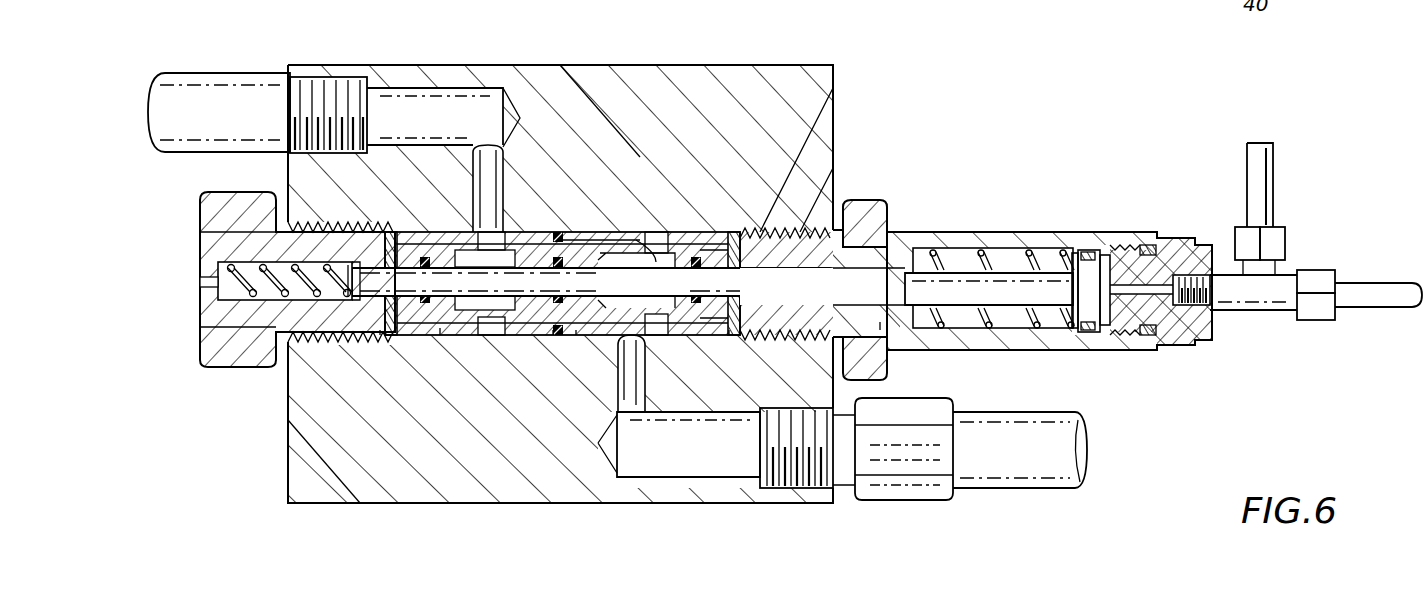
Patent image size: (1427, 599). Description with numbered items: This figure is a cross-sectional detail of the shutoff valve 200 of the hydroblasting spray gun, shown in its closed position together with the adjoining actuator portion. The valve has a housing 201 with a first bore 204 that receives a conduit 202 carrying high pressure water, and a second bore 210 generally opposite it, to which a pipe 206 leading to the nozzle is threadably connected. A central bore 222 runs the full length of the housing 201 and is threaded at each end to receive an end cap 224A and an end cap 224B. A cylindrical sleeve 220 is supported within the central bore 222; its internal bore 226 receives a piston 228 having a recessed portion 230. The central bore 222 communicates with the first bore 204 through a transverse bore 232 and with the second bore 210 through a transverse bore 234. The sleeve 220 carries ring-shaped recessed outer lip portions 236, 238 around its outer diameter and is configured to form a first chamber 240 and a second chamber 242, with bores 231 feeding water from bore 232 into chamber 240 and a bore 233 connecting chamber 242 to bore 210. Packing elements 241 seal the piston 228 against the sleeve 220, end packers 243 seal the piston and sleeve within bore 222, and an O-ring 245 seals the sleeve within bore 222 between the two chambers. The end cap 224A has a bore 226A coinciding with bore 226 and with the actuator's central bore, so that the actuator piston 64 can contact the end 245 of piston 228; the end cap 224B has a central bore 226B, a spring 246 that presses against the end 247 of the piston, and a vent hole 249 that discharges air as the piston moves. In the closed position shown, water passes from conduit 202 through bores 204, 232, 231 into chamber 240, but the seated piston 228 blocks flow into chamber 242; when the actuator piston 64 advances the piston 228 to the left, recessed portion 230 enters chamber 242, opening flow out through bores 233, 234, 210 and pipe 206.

The piston 64 is at (987, 290).
The shutoff valve 200 is at (702, 58).
The housing 201 is at (582, 82).
The conduit 202 is at (1025, 478).
The first bore 204 is at (722, 462).
The pipe 206 is at (220, 92).
The second bore 210 is at (417, 105).
The cylindrical sleeve 220 is at (548, 228).
The central bore 222 is at (663, 232).
The end cap 224A is at (812, 232).
The end cap 224B is at (225, 356).
The internal bore 226 is at (730, 232).
The bore 226A is at (866, 212).
The central bore 226B is at (208, 322).
The piston 228 is at (287, 388).
The recessed portion 230 is at (590, 232).
The bores 231 is at (615, 400).
The transverse bore 232 is at (640, 390).
The bore 233 is at (475, 256).
The transverse bore 234 is at (487, 200).
The recessed outer lip portion 236 is at (440, 338).
The recessed outer lip portion 238 is at (642, 242).
The first chamber 240 is at (692, 262).
The packing elements 241 is at (395, 337).
The second chamber 242 is at (462, 252).
The end packers 243 is at (392, 228).
The O-ring 245 is at (553, 336).
The spring 246 is at (240, 264).
The end 247 is at (348, 262).
The vent hole 249 is at (208, 282).